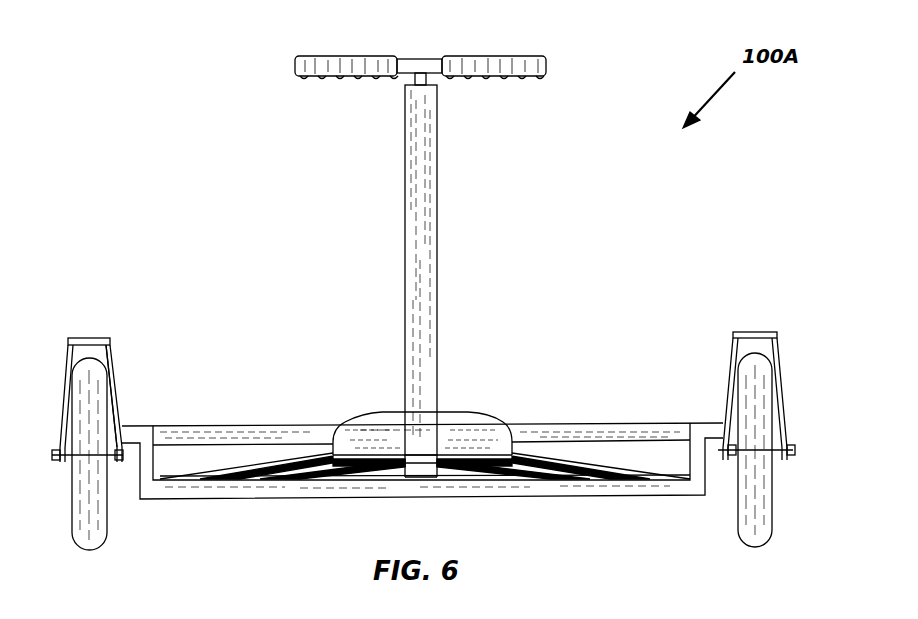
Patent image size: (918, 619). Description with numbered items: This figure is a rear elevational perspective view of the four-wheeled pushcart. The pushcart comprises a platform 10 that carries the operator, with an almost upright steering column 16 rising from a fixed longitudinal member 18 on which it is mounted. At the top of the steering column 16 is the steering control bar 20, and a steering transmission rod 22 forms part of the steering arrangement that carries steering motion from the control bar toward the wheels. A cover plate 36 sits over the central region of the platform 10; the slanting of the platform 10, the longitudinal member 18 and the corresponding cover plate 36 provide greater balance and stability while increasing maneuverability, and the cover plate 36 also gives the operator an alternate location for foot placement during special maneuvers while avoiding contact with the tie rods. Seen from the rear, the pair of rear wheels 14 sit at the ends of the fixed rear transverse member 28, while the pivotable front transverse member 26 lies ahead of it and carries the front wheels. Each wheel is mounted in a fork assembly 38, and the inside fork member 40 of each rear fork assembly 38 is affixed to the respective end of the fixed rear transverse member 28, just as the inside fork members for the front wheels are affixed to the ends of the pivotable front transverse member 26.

The platform 10 is at (345, 486).
The rear wheels 14 is at (98, 547).
The steering column 16 is at (430, 236).
The longitudinal member 18 is at (423, 472).
The steering control bar 20 is at (540, 57).
The steering transmission rod 22 is at (423, 77).
The pivotable front transverse member 26 is at (572, 433).
The fixed rear transverse member 28 is at (543, 492).
The cover plate 36 is at (355, 427).
The fork assembly 38 is at (83, 340).
The inside fork member 40 is at (117, 393).